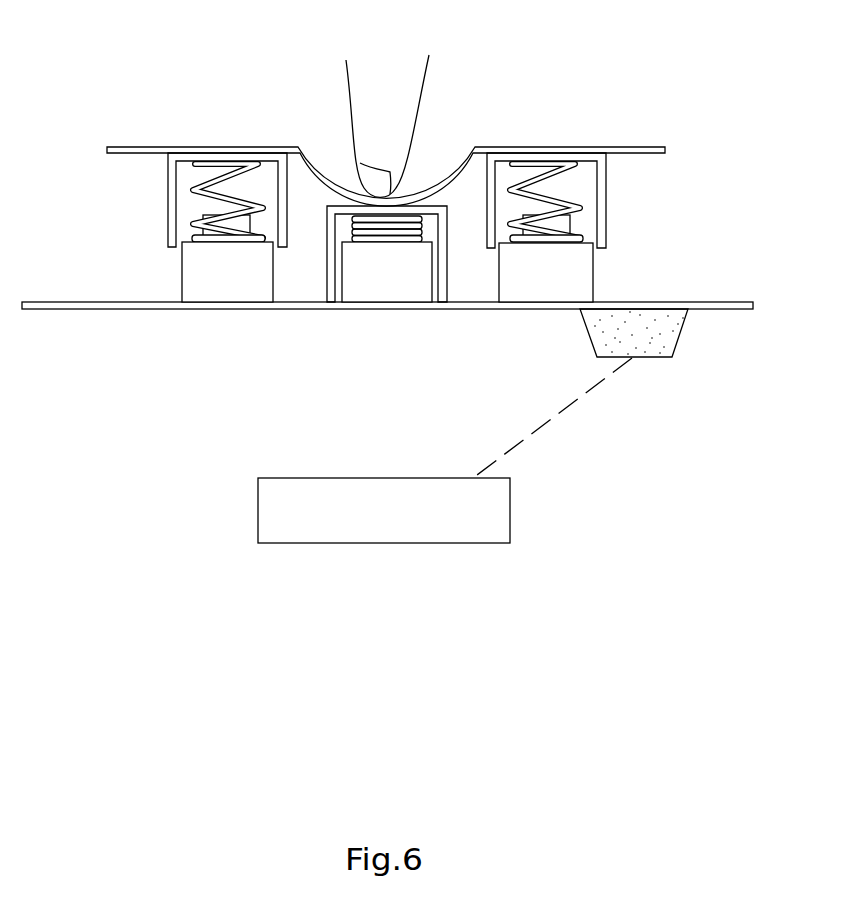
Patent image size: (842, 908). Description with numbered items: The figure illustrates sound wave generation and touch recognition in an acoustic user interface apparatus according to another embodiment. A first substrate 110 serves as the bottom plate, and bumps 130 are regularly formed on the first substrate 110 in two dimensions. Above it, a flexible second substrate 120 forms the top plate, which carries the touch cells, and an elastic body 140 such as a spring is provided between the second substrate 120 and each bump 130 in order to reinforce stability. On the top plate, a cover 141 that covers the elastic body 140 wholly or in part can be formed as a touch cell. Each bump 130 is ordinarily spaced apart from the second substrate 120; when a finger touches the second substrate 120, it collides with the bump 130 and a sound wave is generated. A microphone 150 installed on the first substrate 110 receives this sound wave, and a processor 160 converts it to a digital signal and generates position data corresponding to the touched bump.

The first substrate 110 is at (35, 309).
The second substrate 120 is at (118, 146).
The bump 130 is at (592, 275).
The elastic body 140 is at (580, 218).
The cover 141 is at (602, 180).
The microphone 150 is at (682, 330).
The processor 160 is at (510, 512).